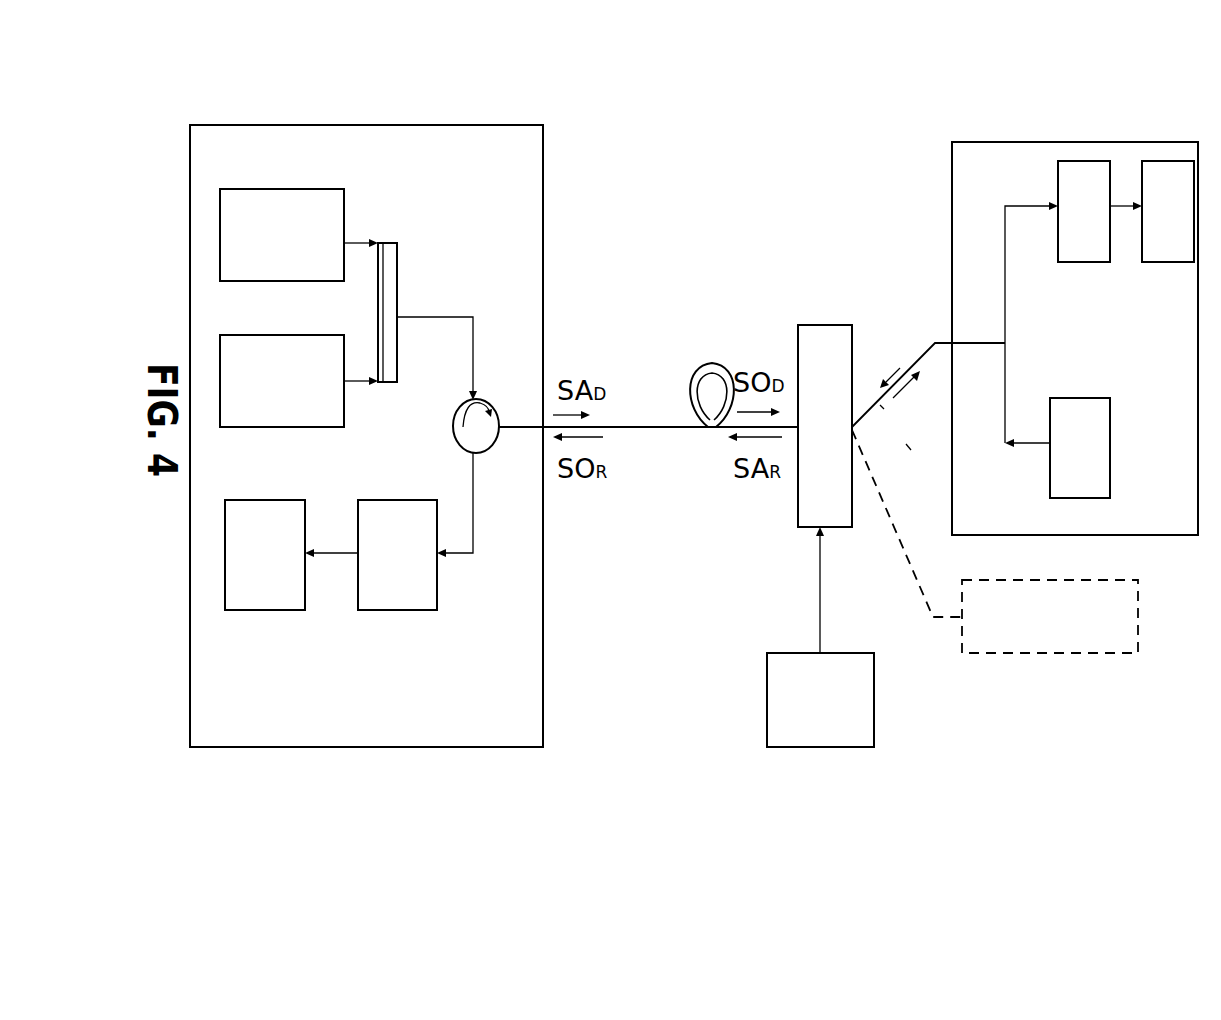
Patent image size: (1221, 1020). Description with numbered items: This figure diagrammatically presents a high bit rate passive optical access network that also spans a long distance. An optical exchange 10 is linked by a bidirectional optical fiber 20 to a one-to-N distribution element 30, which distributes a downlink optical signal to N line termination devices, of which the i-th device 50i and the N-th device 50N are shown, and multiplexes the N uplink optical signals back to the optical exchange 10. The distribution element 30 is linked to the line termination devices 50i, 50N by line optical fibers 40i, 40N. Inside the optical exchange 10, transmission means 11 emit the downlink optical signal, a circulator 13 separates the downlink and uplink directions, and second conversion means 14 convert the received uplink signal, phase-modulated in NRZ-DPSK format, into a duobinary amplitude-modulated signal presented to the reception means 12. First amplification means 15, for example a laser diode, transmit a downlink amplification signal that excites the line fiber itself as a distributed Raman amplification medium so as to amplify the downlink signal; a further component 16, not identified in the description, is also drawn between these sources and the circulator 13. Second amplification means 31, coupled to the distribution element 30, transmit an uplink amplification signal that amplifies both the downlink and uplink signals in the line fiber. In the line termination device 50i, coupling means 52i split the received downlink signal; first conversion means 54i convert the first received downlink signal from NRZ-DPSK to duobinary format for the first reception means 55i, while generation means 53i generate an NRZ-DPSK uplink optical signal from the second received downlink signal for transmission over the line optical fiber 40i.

The optical exchange 10 is at (402, 125).
The transmission means 11 is at (300, 189).
The reception means 12 is at (277, 500).
The circulator 13 is at (494, 373).
The second conversion means 14 is at (410, 500).
The first amplification means 15 is at (300, 335).
The optical combiner 16 is at (397, 243).
The bidirectional optical fiber 20 is at (657, 427).
The distribution element 30 is at (822, 325).
The second amplification means 31 is at (840, 653).
The line optical fiber 40i is at (917, 358).
The line optical fiber 40N is at (916, 572).
The line termination device 50i is at (1028, 142).
The line termination device 50N is at (1020, 580).
The coupling means 52i is at (1004, 340).
The generation means 53i is at (1067, 398).
The first conversion means 54i is at (1080, 262).
The first reception means 55i is at (1165, 262).